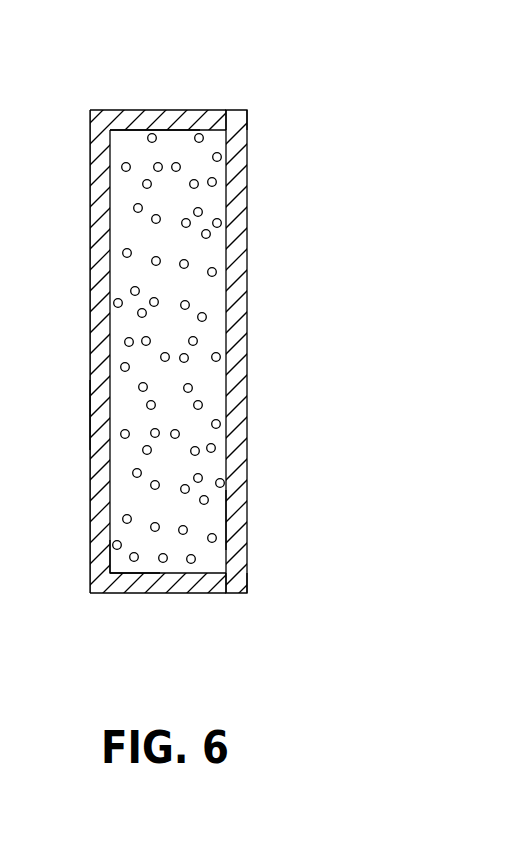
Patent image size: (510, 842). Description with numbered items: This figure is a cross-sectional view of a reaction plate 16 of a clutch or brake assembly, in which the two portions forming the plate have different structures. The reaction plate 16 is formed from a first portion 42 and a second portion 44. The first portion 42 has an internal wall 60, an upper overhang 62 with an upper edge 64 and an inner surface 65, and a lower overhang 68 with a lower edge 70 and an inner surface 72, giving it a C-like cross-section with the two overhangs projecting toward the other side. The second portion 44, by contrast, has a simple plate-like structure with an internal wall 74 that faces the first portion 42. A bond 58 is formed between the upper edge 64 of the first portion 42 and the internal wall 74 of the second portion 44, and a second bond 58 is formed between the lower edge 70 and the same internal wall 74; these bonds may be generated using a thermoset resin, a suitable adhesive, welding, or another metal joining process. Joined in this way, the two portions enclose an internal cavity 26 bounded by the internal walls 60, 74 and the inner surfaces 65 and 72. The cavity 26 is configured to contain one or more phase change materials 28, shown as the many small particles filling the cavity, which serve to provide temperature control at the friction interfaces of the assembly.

The reaction plate 16 is at (258, 62).
The internal cavity 26 is at (173, 209).
The phase change material 28 is at (220, 420).
The first portion 42 is at (100, 305).
The second portion 44 is at (233, 323).
The bond 58 is at (243, 119).
The internal wall 60 is at (108, 410).
The upper overhang 62 is at (140, 123).
The upper edge 64 is at (227, 115).
The inner surface 65 is at (144, 130).
The lower overhang 68 is at (150, 580).
The lower edge 70 is at (225, 577).
The inner surface 72 is at (137, 572).
The internal wall 74 is at (226, 511).